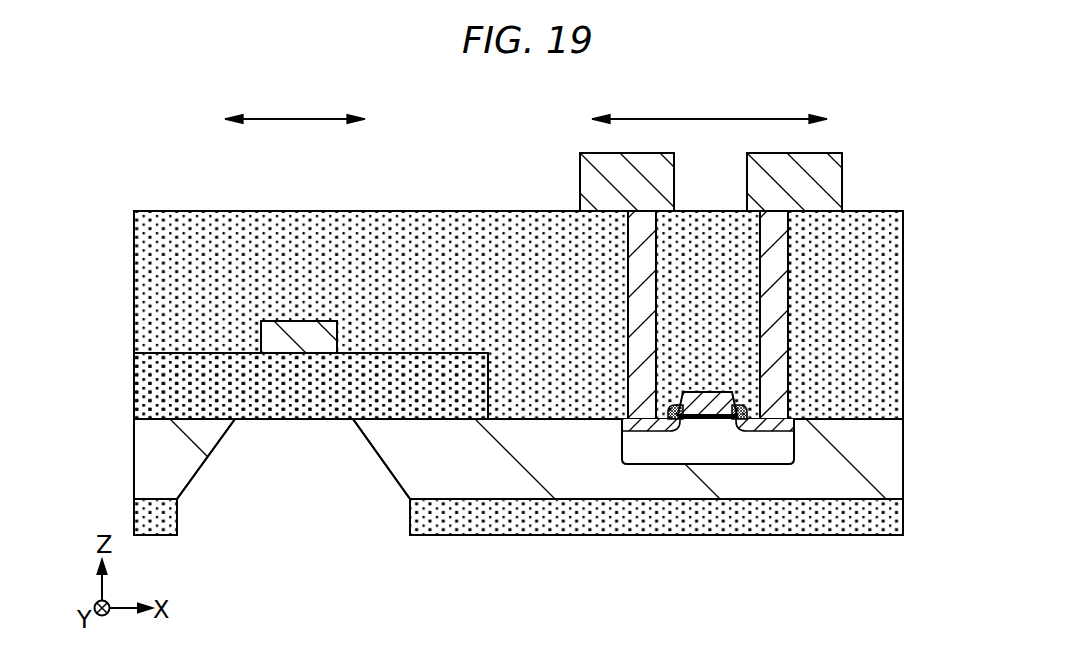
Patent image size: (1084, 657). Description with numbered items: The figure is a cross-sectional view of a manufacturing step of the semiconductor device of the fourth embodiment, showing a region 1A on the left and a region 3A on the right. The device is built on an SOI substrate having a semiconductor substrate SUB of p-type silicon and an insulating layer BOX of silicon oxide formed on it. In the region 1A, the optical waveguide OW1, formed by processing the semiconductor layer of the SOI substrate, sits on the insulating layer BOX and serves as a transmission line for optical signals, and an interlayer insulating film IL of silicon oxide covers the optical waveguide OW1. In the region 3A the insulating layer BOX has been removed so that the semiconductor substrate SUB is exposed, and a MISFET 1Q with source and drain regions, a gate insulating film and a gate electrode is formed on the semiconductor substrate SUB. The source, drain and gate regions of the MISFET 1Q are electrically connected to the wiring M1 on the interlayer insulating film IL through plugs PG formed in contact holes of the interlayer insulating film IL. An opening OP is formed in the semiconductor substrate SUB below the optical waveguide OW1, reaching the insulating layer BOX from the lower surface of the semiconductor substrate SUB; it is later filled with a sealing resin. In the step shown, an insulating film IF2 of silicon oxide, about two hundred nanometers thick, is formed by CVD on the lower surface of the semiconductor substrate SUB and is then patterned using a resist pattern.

The interlayer insulating film IL is at (157, 240).
The insulating layer BOX is at (157, 380).
The optical waveguide OW1 is at (273, 335).
The semiconductor substrate SUB is at (155, 448).
The opening OP is at (379, 460).
The insulating film IF2 is at (889, 513).
The plug PG is at (642, 302).
The wiring M1 is at (660, 182).
The MISFET 1Q is at (713, 440).
The region 1A is at (295, 106).
The region 3A is at (709, 106).